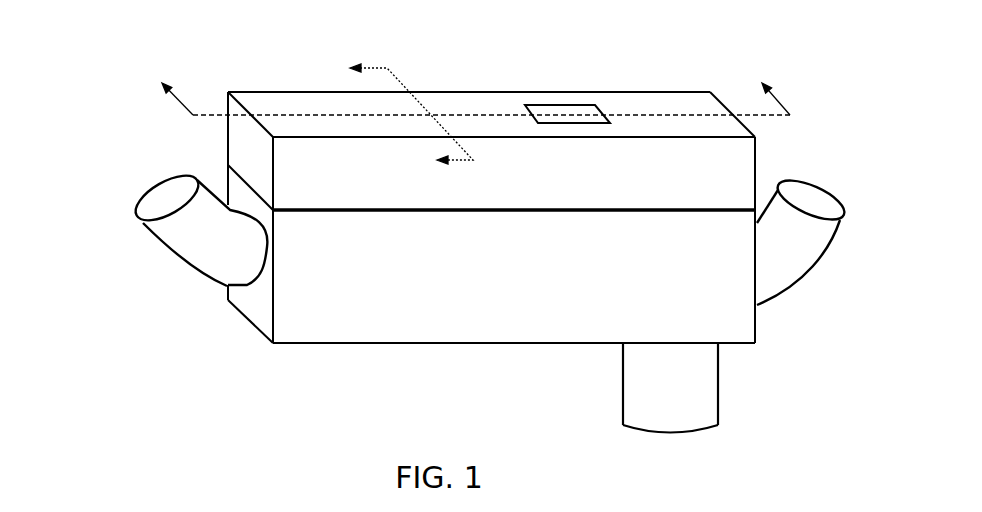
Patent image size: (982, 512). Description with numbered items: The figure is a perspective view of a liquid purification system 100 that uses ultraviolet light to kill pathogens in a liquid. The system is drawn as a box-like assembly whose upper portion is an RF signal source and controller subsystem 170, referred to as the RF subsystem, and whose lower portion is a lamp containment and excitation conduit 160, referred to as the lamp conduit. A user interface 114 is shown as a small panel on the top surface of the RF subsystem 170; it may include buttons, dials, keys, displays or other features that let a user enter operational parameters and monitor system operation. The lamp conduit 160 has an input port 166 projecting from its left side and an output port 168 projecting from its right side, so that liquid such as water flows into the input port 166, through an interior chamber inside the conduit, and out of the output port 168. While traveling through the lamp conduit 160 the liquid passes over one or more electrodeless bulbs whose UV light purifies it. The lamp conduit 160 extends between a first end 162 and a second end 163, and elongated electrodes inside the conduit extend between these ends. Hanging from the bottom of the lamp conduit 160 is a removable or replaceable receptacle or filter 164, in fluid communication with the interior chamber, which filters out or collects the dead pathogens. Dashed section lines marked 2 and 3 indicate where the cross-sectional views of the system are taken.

The liquid purification system 100 is at (107, 76).
The line 2- 2 is at (473, 87).
The line 3- 3 is at (401, 118).
The user interface 114 is at (550, 103).
The lamp containment and excitation conduit 160 is at (412, 323).
The first end of the lamp conduit 162 is at (258, 325).
The second end of the lamp conduit 163 is at (757, 333).
The removable and/or replaceable receptacle or filter 164 is at (623, 368).
The input port 166 is at (188, 242).
The output port 168 is at (793, 257).
The RF signal source and controller subsystem 170 is at (315, 103).